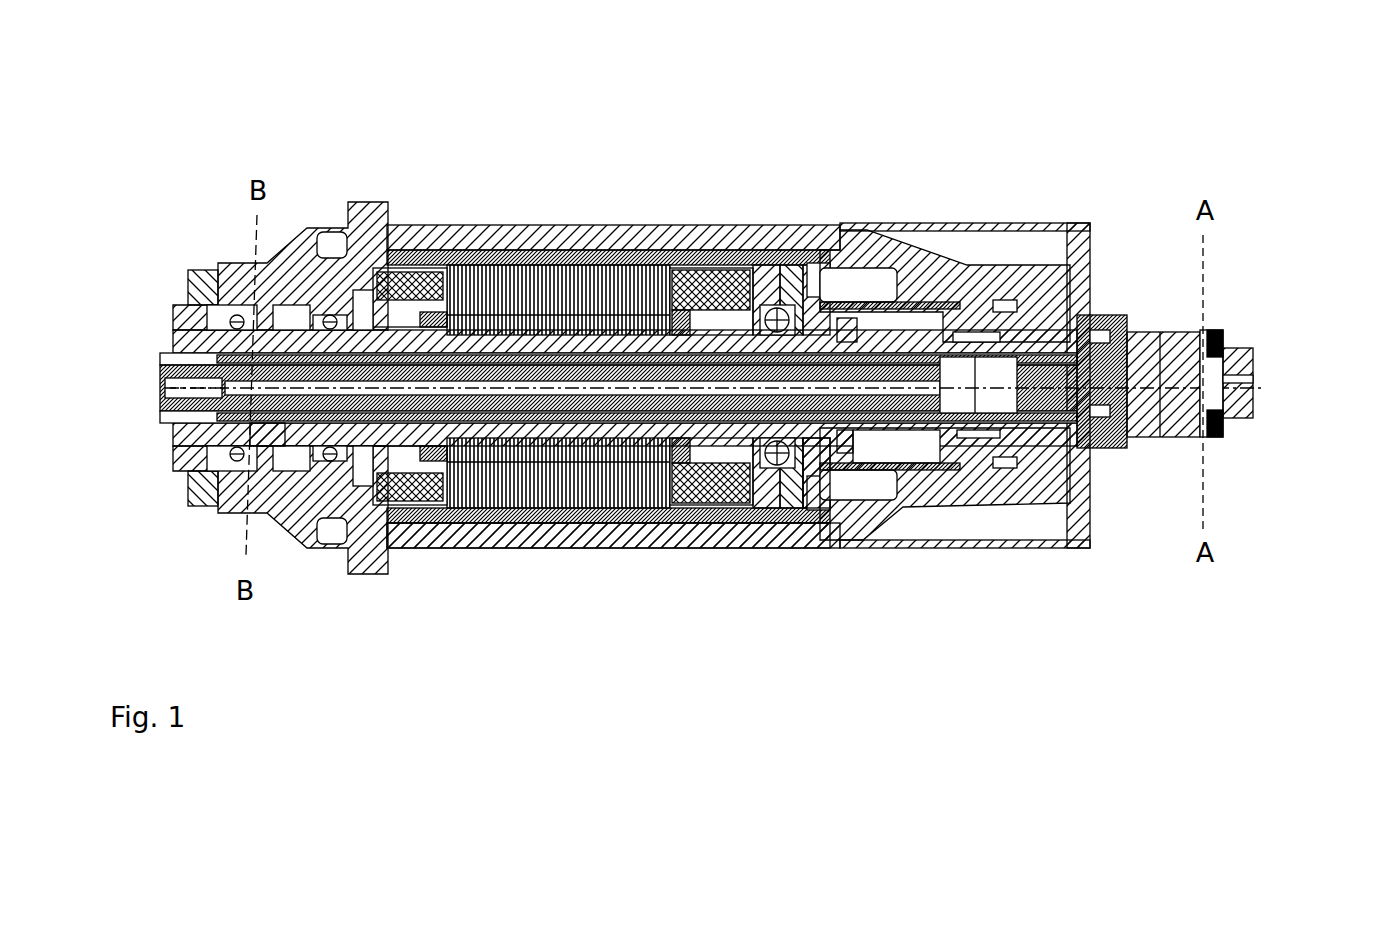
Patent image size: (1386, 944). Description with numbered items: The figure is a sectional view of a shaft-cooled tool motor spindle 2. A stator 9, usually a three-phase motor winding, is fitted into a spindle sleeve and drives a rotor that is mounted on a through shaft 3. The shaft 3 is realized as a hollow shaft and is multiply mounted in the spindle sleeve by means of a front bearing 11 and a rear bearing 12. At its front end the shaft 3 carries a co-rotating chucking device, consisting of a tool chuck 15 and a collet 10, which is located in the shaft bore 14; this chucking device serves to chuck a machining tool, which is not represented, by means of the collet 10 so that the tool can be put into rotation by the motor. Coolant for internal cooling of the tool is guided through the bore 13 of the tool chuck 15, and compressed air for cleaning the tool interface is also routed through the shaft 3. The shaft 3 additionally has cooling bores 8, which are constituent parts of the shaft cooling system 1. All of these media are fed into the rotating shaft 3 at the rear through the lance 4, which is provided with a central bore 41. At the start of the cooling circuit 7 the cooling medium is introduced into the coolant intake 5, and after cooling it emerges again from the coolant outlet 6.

The shaft cooling system 1 is at (637, 330).
The tool motor spindle 2 is at (932, 197).
The shaft 3 is at (577, 265).
The lance 4 is at (1165, 332).
The coolant intake 5 is at (1222, 330).
The coolant outlet 6 is at (1222, 432).
The cooling circuit 7 is at (271, 426).
The cooling bores 8 is at (697, 446).
The stator 9 is at (430, 330).
The collet 10 is at (166, 365).
The front bearing 11 is at (323, 305).
The rear bearing 12 is at (780, 308).
The bore of the tool chuck 13 is at (567, 548).
The shaft bore 14 is at (430, 397).
The tool chuck 15 is at (813, 468).
The central bore 41 is at (1138, 448).